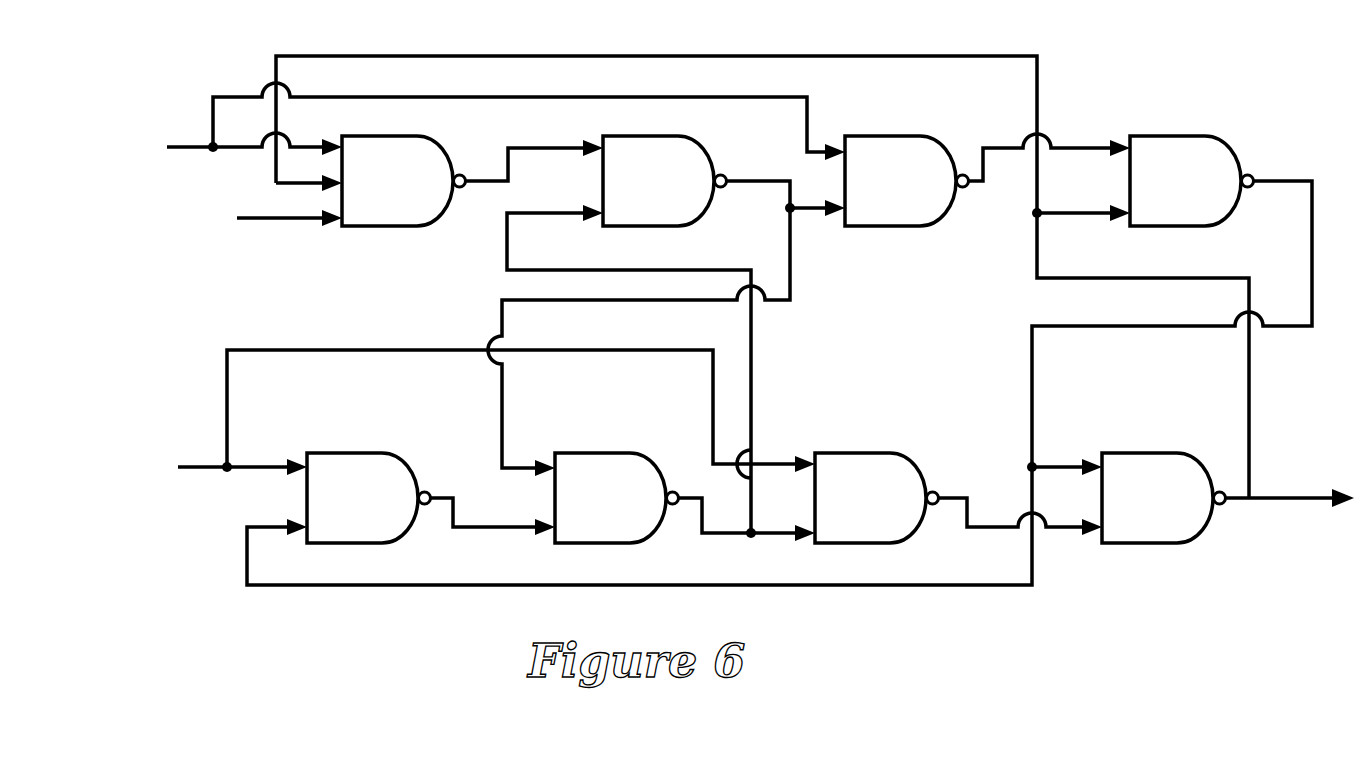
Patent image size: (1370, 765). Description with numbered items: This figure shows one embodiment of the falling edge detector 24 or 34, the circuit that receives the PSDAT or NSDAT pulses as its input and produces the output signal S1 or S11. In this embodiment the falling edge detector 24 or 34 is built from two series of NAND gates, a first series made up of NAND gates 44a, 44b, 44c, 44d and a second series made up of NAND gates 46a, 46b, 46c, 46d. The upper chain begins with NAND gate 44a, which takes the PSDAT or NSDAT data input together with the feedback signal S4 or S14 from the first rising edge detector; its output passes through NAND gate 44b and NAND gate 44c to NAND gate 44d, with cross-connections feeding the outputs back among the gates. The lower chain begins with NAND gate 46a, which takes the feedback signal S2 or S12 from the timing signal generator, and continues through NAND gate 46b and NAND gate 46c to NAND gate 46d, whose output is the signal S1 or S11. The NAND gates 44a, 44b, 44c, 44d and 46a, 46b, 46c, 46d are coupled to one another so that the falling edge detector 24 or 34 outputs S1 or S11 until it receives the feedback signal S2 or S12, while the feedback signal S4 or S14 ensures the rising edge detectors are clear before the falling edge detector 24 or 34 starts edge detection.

The falling edge detector 24 is at (725, 344).
The falling edge detector 34 is at (725, 344).
The NAND gate 44a is at (373, 227).
The NAND gate 44b is at (650, 227).
The NAND gate 44c is at (885, 227).
The NAND gate 44d is at (1212, 227).
The NAND gate 46a is at (352, 543).
The NAND gate 46b is at (613, 543).
The NAND gate 46c is at (893, 543).
The NAND gate 46d is at (1188, 543).